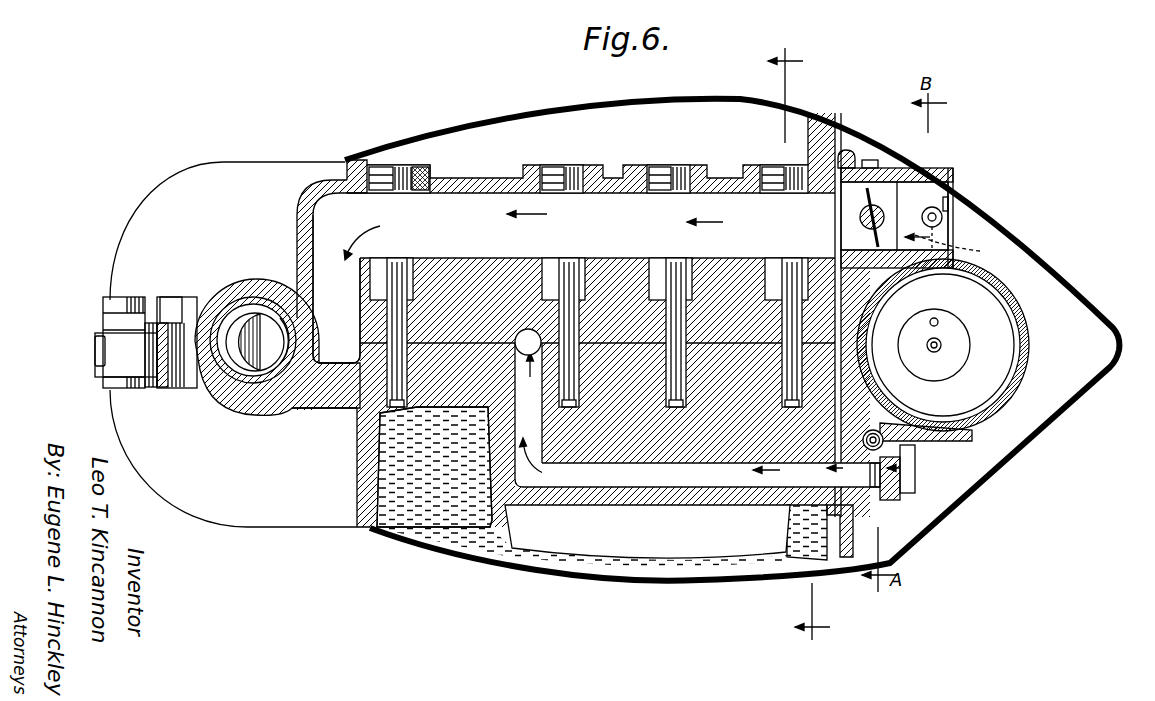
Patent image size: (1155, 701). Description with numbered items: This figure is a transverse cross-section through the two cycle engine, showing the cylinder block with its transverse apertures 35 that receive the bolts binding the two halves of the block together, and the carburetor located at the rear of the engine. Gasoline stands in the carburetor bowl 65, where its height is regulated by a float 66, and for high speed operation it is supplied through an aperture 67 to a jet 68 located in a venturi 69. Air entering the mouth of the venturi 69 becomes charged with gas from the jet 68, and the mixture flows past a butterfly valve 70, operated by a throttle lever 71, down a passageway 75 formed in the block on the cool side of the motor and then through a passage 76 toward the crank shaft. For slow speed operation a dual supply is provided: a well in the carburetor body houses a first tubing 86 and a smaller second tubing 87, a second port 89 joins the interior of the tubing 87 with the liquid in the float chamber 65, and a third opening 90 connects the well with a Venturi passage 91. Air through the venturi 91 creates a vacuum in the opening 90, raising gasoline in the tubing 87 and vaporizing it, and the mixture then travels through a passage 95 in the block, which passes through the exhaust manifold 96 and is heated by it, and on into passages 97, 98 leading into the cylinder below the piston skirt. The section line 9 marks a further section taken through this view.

The section line 9- 9 is at (799, 347).
The transverse apertures 35 is at (426, 300).
The carburetor bowl 65 is at (897, 372).
The float 66 is at (896, 328).
The aperture 67 is at (959, 248).
The jet 68 is at (924, 211).
The venturi 69 is at (950, 212).
The butterfly valve 70 is at (872, 236).
The throttle lever 71 is at (874, 203).
The passageway 75 is at (603, 257).
The passage 76 is at (275, 342).
The first tubing 86 is at (890, 440).
The second tubing 87 is at (905, 466).
The second port 89 is at (956, 437).
The third opening 90 is at (868, 475).
The Venturi passage 91 is at (905, 487).
The passage 95 is at (726, 480).
The exhaust manifold 96 is at (700, 545).
The passage 97 is at (542, 428).
The passage 98 is at (526, 329).